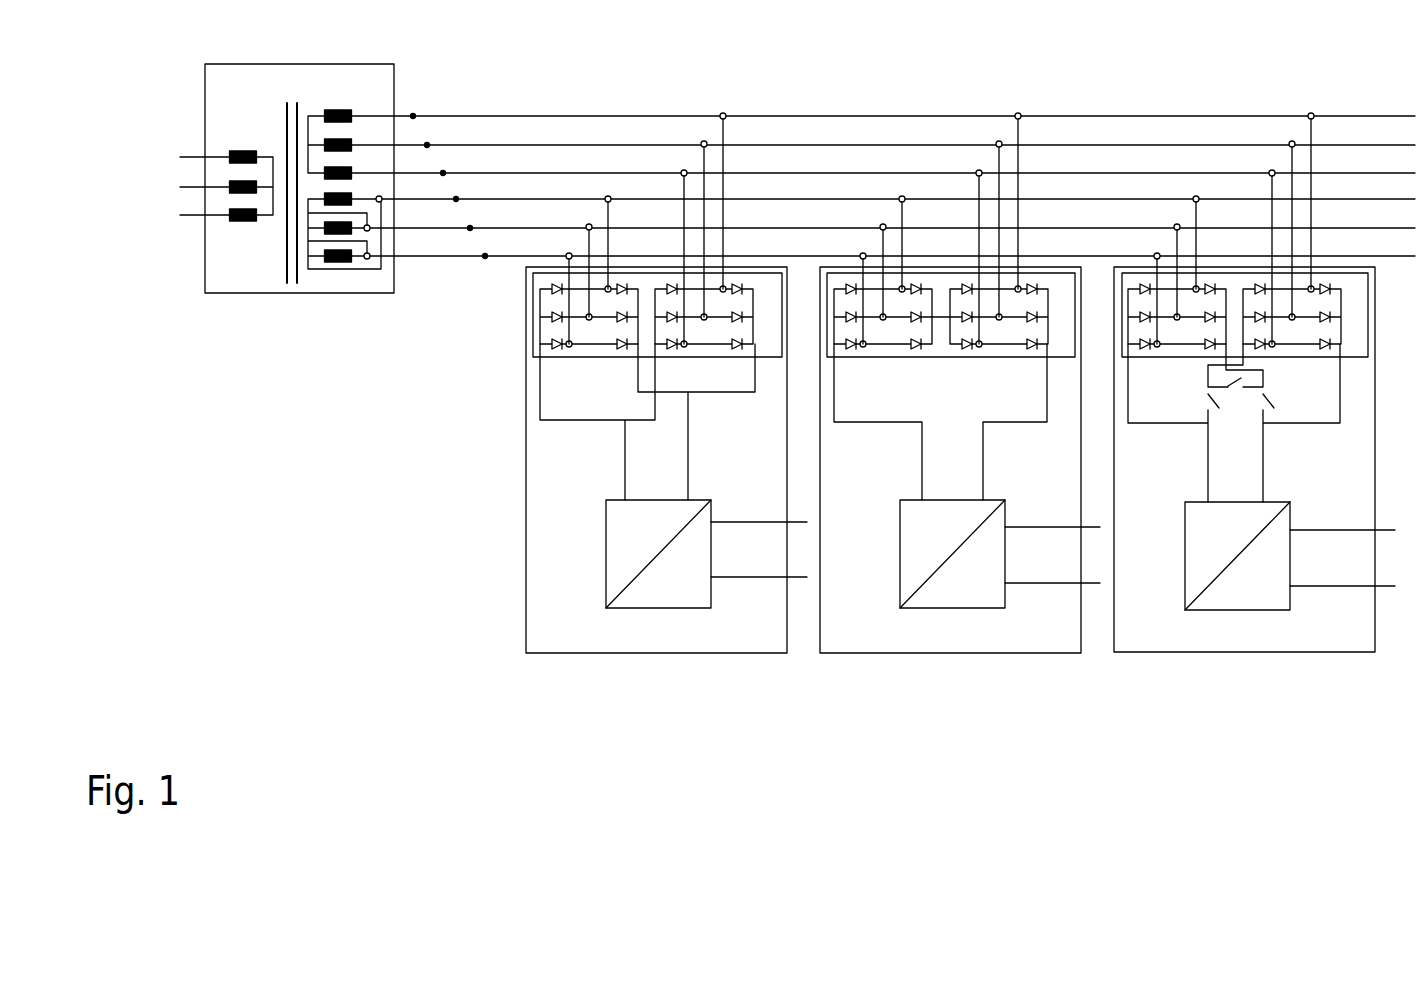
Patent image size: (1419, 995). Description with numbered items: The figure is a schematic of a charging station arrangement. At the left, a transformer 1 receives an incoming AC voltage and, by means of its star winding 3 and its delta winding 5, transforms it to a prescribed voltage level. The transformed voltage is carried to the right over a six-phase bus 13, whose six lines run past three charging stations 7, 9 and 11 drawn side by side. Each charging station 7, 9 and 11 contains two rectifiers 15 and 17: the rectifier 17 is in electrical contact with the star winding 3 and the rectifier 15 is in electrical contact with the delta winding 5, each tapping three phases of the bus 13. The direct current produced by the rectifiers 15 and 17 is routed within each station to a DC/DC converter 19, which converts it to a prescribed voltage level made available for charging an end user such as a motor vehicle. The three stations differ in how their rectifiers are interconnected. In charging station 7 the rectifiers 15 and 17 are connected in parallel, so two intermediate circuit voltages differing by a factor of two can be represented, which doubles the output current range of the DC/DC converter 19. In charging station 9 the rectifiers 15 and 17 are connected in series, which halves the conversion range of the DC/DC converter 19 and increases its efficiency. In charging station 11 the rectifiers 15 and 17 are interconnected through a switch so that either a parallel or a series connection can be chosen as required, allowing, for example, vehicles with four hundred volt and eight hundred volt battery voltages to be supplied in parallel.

The transformer 1 is at (394, 80).
The star winding 3 is at (332, 115).
The delta winding 5 is at (346, 270).
The charging station 7 is at (666, 487).
The charging station 9 is at (960, 488).
The charging station 11 is at (1254, 488).
The 6-phase bus 13 is at (413, 116).
The rectifier 15 is at (589, 344).
The rectifier 17 is at (705, 344).
The DC/DC converter 19 is at (607, 567).